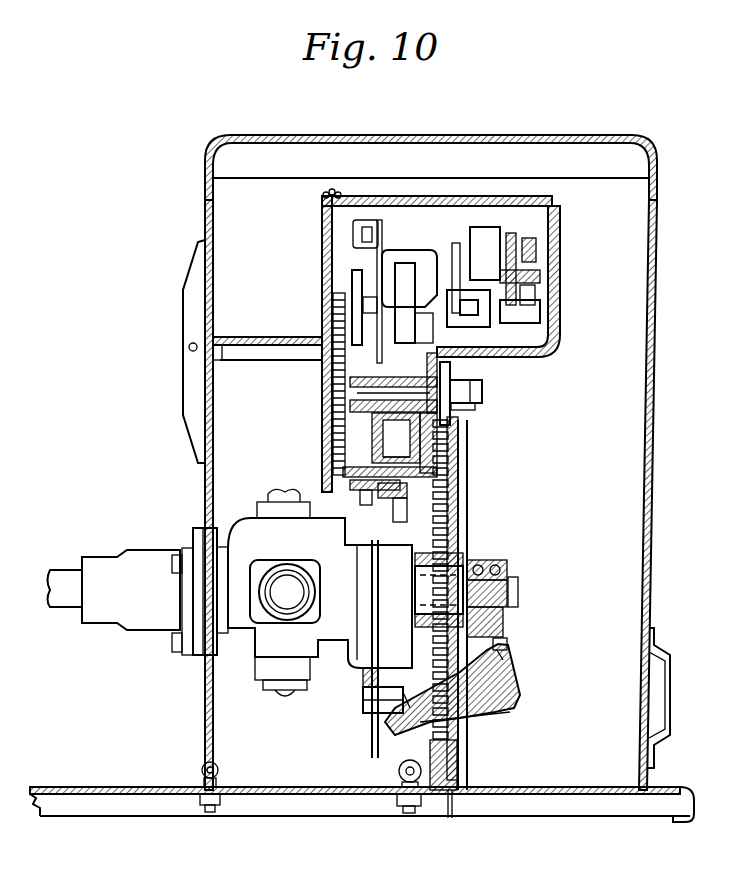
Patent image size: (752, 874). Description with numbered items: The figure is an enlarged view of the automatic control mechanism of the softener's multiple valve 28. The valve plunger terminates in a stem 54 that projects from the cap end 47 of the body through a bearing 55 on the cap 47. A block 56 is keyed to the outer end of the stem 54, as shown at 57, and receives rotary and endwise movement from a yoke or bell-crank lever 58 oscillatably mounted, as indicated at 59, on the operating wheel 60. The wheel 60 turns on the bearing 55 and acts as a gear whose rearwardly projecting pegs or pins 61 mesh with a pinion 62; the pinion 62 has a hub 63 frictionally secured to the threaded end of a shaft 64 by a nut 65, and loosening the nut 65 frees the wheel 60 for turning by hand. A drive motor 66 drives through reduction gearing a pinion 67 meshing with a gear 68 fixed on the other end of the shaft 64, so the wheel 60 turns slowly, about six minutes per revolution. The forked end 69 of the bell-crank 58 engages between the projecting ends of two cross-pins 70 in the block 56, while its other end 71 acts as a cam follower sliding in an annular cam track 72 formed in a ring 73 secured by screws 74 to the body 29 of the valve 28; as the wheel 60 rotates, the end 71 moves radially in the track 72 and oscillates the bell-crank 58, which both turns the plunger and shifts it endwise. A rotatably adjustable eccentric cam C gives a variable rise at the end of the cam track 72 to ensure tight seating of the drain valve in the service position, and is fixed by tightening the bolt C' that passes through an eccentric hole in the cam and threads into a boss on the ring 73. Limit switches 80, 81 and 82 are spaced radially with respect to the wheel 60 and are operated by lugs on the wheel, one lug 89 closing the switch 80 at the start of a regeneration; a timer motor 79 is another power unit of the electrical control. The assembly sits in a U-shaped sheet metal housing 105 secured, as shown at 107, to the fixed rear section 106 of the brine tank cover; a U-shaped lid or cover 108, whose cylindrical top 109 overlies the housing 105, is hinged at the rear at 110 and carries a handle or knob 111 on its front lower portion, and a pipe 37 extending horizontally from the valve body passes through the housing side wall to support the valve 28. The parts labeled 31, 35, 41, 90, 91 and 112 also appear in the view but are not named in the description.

The multiple valve 28 is at (243, 644).
The valve body 29 is at (336, 642).
The vent fitting 31 is at (266, 496).
The drain plug 35 is at (300, 690).
The pipe 37 is at (313, 600).
The drive shaft 41 is at (49, 608).
The cap end 47 is at (383, 571).
The stem 54 is at (504, 620).
The bearing 55 is at (418, 590).
The block 56 is at (508, 642).
The key 57 is at (490, 563).
The bell-crank lever 58 is at (520, 688).
The pivot mounting 59 is at (505, 712).
The operating wheel 60 is at (467, 500).
The pegs or pins 61 is at (470, 775).
The pinion 62 is at (451, 368).
The hub 63 is at (483, 391).
The shaft 64 is at (372, 408).
The nut 65 is at (476, 407).
The drive motor 66 is at (405, 252).
The pinion 67 is at (339, 293).
The gear 68 is at (372, 440).
The forked end 69 is at (505, 650).
The cross-pins 70 is at (508, 565).
The cam follower end 71 is at (385, 735).
The annular cam track 72 is at (396, 512).
The ring 73 is at (355, 492).
The screws 74 is at (362, 507).
The timer motor 79 is at (479, 232).
The limit switch 80 is at (410, 430).
The limit switch 81 is at (410, 446).
The limit switch 82 is at (410, 460).
The lug 89 is at (458, 437).
The gear 90 is at (520, 305).
The pinion 91 is at (541, 276).
The sheet metal housing 105 is at (206, 722).
The rear cover section 106 is at (156, 786).
The securing point 107 is at (218, 766).
The lid or cover 108 is at (650, 546).
The cover top 109 is at (574, 140).
The hinge 110 is at (190, 349).
The handle or knob 111 is at (668, 655).
The base flange 112 is at (537, 788).
The adjustable cam C is at (383, 676).
The bolt C' is at (411, 691).